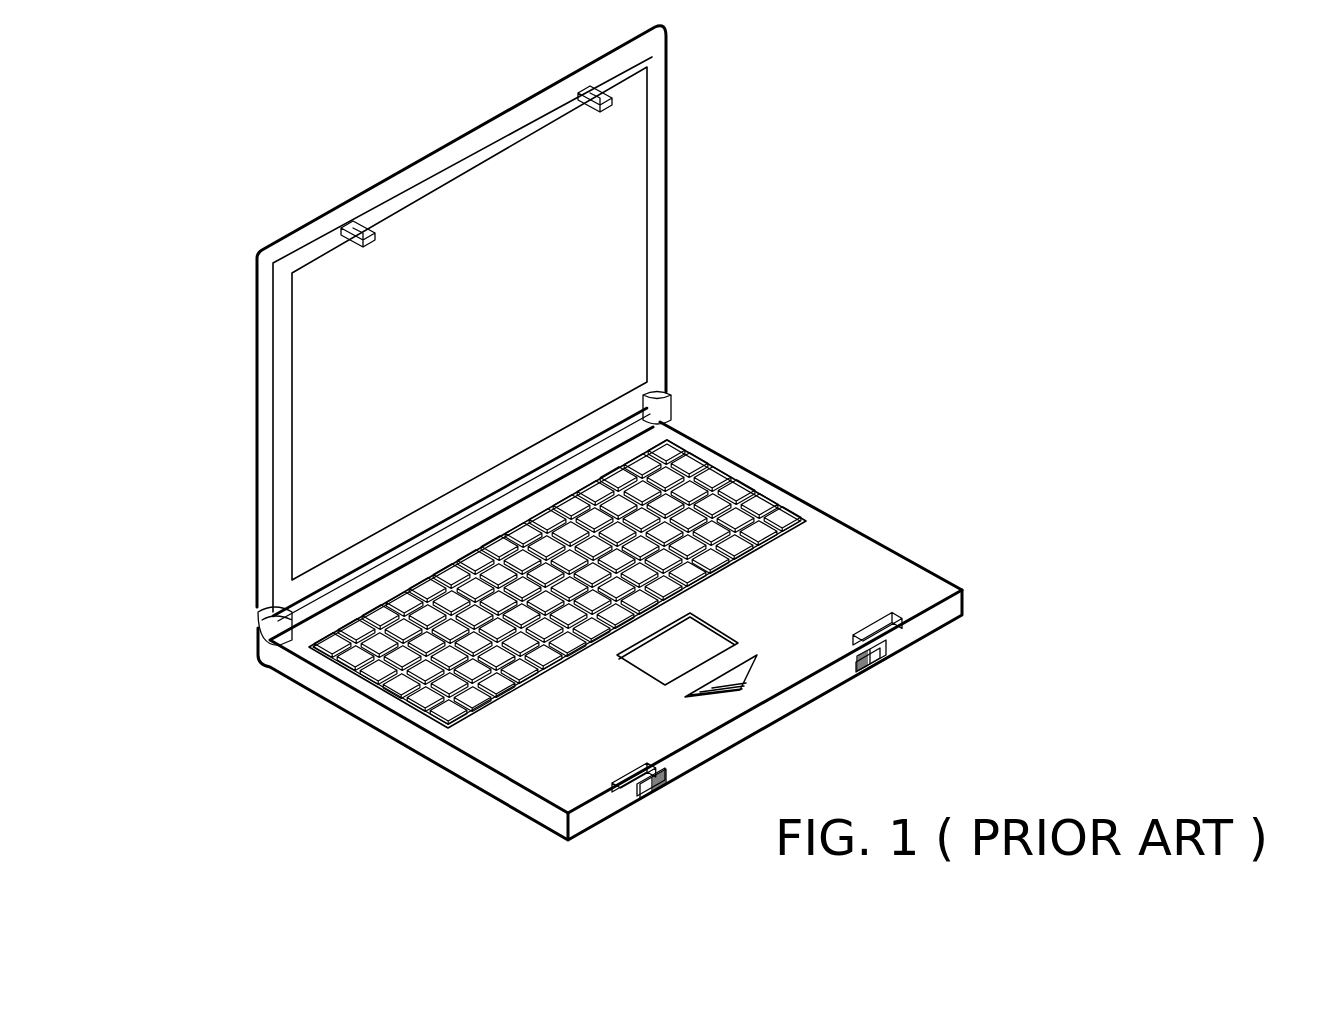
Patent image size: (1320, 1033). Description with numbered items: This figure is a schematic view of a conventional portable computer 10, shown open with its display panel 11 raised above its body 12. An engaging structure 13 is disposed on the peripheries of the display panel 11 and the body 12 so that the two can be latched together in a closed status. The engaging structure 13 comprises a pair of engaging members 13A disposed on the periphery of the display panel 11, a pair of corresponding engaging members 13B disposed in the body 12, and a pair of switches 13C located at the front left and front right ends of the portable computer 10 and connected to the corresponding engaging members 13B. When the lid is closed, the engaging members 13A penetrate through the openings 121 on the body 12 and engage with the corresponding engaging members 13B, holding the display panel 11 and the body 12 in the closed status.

The portable computer 10 is at (1162, 90).
The display panel 11 is at (350, 380).
The body 12 is at (485, 735).
The engaging structure 13 is at (1058, 345).
The engaging members 13A is at (373, 240).
The corresponding engaging members 13B is at (622, 775).
The switches 13C is at (660, 788).
The openings 121 is at (650, 762).